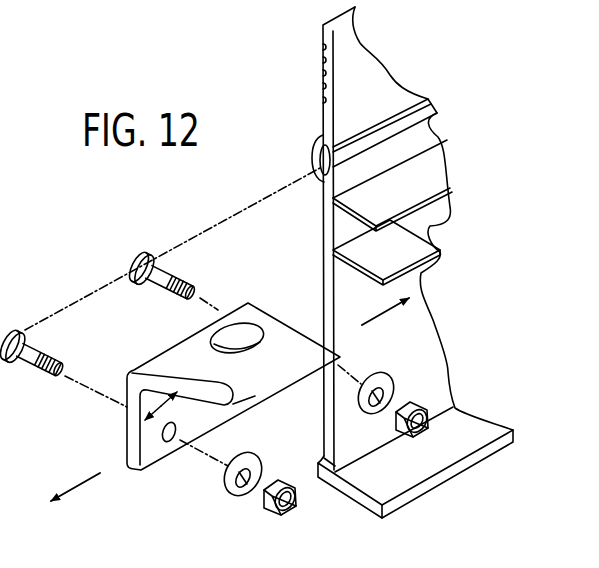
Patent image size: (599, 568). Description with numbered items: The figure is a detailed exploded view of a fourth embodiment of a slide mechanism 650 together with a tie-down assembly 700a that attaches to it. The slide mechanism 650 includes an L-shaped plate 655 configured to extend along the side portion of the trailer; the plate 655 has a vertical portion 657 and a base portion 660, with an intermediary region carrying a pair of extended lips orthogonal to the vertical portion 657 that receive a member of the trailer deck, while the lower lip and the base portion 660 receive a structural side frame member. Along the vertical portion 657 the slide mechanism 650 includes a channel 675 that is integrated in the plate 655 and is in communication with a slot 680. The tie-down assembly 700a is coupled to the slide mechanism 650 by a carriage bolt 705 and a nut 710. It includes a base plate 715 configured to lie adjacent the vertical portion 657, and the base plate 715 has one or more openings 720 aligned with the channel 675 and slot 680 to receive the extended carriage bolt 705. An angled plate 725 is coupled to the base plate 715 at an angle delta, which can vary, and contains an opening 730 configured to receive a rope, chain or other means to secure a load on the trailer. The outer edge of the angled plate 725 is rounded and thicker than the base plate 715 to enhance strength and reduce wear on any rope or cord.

The slide mechanism 650 is at (458, 172).
The L-shaped plate 655 is at (411, 185).
The vertical portion 657 is at (367, 63).
The base portion 660 is at (457, 448).
The channel 675 is at (316, 142).
The slot 680 is at (407, 106).
The tie-down assembly 700a is at (139, 499).
The carriage bolt 705 is at (20, 345).
The nut 710 is at (411, 403).
The base plate 715 is at (151, 452).
The openings 720 is at (174, 441).
The angled plate 725 is at (281, 312).
The opening 730 is at (233, 333).